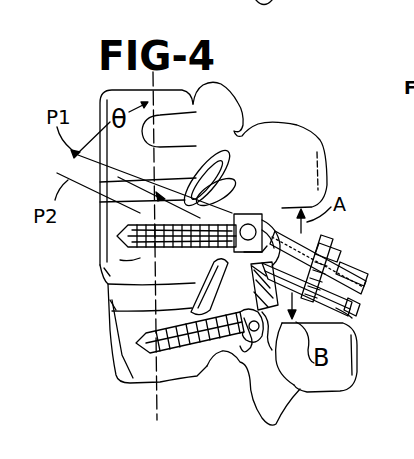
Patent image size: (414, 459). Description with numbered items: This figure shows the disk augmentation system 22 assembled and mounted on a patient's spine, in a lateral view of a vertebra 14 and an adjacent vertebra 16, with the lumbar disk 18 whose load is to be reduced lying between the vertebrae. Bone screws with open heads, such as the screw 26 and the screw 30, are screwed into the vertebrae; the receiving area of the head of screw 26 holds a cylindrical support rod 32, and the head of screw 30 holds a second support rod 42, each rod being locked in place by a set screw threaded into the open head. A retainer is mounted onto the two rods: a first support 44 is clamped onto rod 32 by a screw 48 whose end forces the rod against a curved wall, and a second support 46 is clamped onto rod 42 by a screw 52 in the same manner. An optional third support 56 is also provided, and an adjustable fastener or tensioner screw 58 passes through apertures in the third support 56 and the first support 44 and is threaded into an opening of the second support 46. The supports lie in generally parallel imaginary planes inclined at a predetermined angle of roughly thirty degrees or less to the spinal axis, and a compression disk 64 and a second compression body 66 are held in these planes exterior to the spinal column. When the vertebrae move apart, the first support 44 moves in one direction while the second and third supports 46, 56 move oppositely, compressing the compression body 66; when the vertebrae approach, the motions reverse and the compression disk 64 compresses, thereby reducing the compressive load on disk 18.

The vertebra 14 is at (100, 93).
The vertebra 16 is at (106, 273).
The disk 18 is at (111, 306).
The system for reducing a load 22 is at (351, 223).
The screw 26 is at (127, 231).
The screw 30 is at (118, 356).
The support 32 is at (244, 213).
The support 42 is at (244, 344).
The first support 44 is at (353, 294).
The second support 46 is at (350, 306).
The screw 48 is at (273, 211).
The screw 52 is at (276, 342).
The third support 56 is at (354, 263).
The adjustable fastener 58 is at (355, 245).
The compression disk 64 is at (356, 300).
The compression body 66 is at (353, 284).